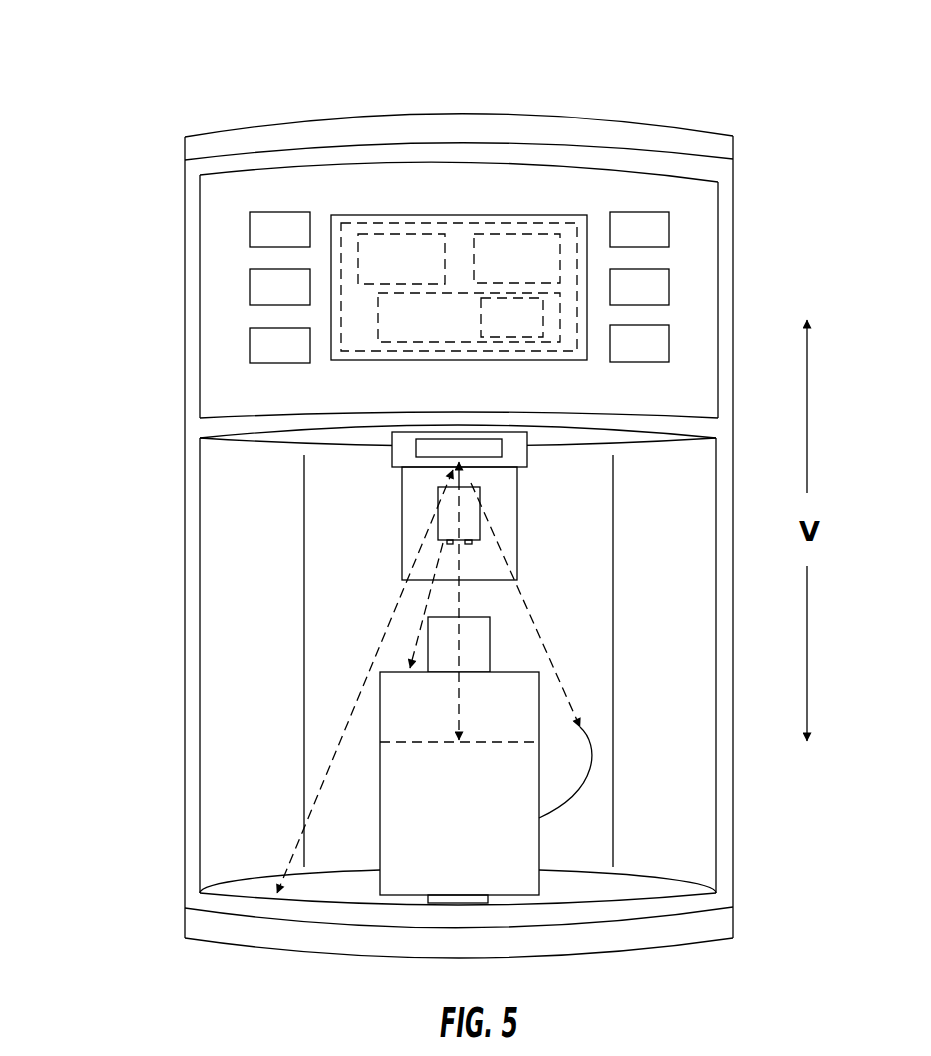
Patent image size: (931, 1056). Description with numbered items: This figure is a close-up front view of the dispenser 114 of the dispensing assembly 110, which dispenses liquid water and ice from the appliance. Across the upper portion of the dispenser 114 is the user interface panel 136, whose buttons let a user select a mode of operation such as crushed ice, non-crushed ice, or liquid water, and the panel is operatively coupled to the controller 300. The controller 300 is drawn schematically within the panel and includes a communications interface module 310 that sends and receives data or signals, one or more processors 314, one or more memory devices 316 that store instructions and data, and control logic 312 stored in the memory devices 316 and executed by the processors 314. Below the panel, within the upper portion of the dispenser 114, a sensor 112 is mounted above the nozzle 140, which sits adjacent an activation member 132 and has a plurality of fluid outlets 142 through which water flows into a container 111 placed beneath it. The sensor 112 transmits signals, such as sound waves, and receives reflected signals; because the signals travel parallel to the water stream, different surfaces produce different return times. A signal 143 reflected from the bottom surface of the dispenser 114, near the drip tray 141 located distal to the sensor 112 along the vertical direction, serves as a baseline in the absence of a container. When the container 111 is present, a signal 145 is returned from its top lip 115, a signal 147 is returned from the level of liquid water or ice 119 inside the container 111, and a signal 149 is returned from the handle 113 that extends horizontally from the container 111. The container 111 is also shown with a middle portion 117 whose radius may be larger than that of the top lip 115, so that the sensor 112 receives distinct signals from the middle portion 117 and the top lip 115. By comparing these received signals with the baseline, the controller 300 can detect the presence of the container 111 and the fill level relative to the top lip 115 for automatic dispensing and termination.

The dispensing assembly 110 is at (153, 100).
The controller 300 is at (455, 217).
The communications interface module 310 is at (418, 273).
The processors 314 is at (535, 273).
The memory devices 316 is at (446, 330).
The control logic 312 is at (531, 332).
The user interface panel 136 is at (217, 250).
The sensor 112 is at (417, 447).
The activation member 132 is at (415, 528).
The nozzle 140 is at (477, 517).
The fluid outlets 142 is at (448, 548).
The signal 145 is at (418, 627).
The signal 149 is at (552, 665).
The top lip 115 is at (372, 673).
The middle portion 117 is at (378, 777).
The signal 147 is at (460, 693).
The level of liquid water or ice 119 is at (498, 745).
The handle 113 is at (567, 795).
The dispenser 114 is at (325, 818).
The signal 143 is at (283, 862).
The container 111 is at (380, 852).
The drip tray 141 is at (648, 887).